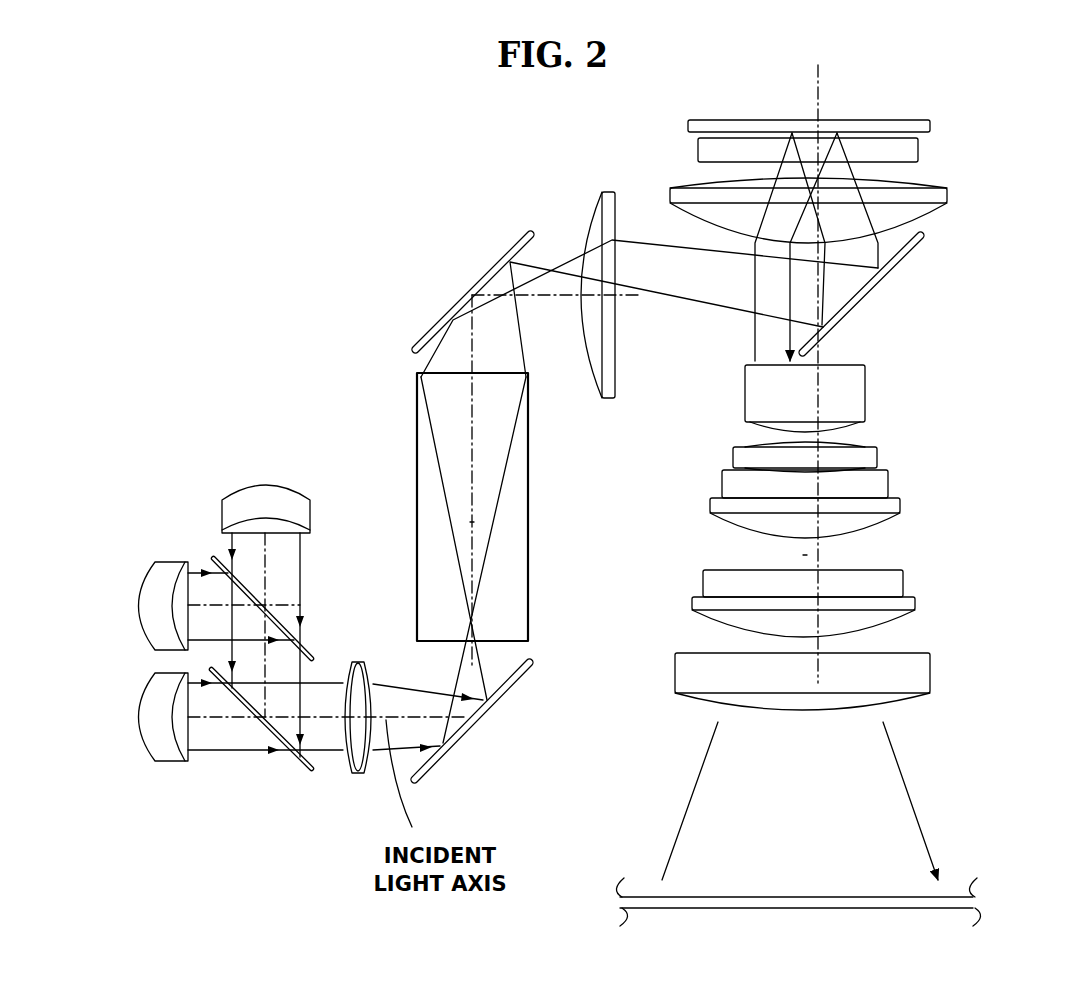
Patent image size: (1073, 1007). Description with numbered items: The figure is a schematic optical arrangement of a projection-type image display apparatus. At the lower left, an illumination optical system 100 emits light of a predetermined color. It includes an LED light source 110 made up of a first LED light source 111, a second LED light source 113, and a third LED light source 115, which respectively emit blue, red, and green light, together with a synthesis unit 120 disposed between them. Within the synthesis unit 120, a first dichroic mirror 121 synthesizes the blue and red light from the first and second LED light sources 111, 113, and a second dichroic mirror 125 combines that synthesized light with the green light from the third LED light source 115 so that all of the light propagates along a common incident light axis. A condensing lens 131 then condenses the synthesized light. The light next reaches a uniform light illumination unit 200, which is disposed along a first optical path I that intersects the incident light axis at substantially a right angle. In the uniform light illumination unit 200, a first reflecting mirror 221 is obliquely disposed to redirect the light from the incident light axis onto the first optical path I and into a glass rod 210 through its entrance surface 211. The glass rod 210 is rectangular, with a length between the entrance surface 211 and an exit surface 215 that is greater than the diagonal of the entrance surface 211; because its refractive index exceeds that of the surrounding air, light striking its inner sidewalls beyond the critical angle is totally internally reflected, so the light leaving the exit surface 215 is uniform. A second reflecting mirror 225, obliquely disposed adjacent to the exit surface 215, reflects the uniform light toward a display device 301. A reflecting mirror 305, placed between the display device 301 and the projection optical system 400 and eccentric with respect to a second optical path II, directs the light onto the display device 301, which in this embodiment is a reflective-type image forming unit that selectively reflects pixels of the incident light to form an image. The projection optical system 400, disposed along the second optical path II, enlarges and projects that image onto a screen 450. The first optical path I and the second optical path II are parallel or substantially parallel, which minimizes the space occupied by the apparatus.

The illumination optical system 100 is at (368, 854).
The light emitting diode (LED) light source 110 is at (195, 488).
The first LED light source 111 is at (252, 485).
The second LED light source 113 is at (138, 604).
The third LED light source 115 is at (138, 717).
The synthesis unit 120 is at (317, 572).
The first dichroic mirror 121 is at (290, 620).
The second dichroic mirror 125 is at (298, 768).
The condensing lens 131 is at (357, 775).
The uniform light illumination unit 200 is at (388, 435).
The glass rod 210 is at (528, 607).
The entrance surface 211 is at (518, 642).
The exit surface 215 is at (502, 372).
The first reflecting mirror 221 is at (500, 698).
The second reflecting mirror 225 is at (425, 333).
The display device 301 is at (930, 128).
The reflecting mirror 305 is at (925, 238).
The projection optical system 400 is at (933, 417).
The screen 450 is at (950, 897).
The first optical path I is at (472, 522).
The second optical path II is at (805, 555).